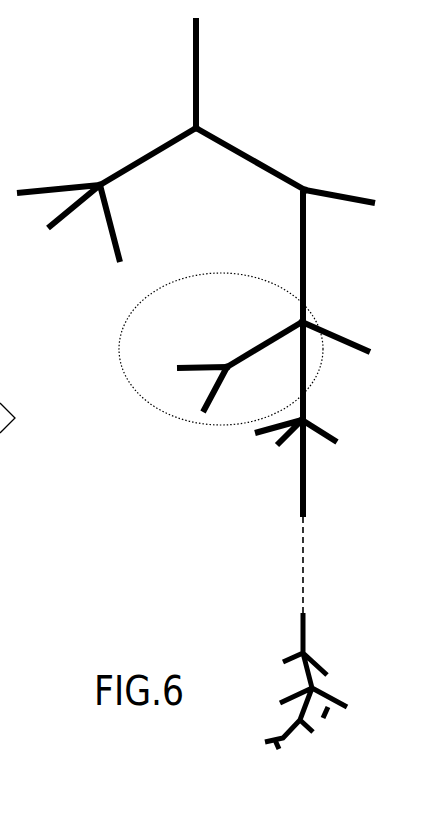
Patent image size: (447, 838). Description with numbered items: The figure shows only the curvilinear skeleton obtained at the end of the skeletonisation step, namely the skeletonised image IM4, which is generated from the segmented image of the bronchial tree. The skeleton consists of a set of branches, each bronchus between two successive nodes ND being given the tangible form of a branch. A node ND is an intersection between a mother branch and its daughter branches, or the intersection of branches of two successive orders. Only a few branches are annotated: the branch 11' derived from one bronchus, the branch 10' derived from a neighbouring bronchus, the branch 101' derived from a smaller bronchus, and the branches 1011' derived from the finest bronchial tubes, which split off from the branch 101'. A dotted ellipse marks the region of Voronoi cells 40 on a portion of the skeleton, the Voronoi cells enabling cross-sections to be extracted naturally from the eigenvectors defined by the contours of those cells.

The skeletonised image IM4 is at (234, 48).
The branch 11' is at (106, 191).
The branch 10' is at (285, 435).
The branch 101' is at (246, 333).
The branches 1011' is at (176, 399).
The Voronoi cells 40 is at (133, 317).
The node ND is at (198, 140).